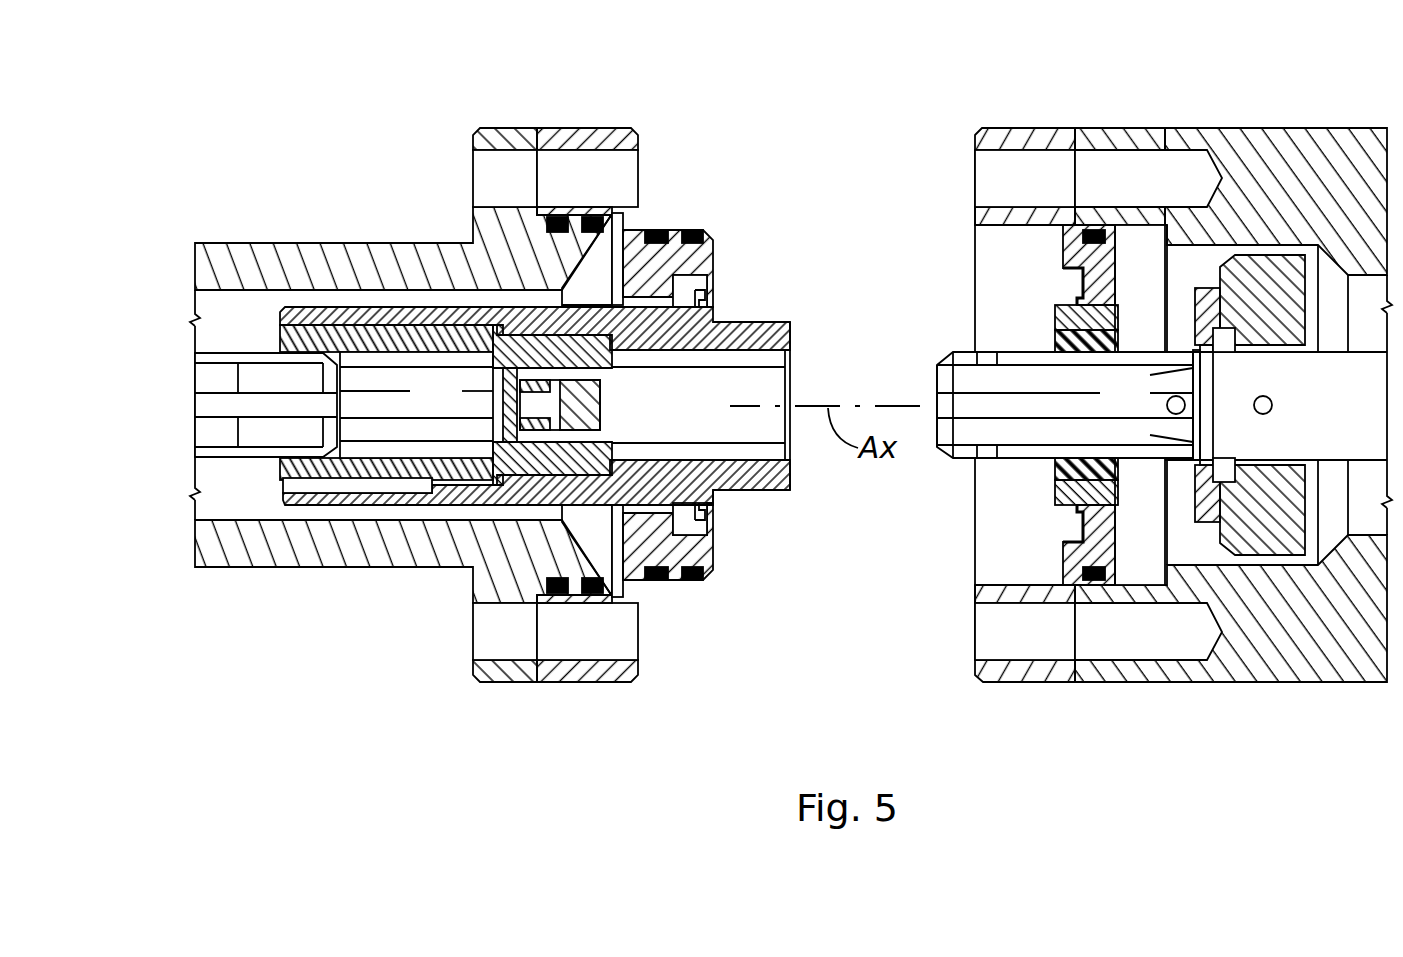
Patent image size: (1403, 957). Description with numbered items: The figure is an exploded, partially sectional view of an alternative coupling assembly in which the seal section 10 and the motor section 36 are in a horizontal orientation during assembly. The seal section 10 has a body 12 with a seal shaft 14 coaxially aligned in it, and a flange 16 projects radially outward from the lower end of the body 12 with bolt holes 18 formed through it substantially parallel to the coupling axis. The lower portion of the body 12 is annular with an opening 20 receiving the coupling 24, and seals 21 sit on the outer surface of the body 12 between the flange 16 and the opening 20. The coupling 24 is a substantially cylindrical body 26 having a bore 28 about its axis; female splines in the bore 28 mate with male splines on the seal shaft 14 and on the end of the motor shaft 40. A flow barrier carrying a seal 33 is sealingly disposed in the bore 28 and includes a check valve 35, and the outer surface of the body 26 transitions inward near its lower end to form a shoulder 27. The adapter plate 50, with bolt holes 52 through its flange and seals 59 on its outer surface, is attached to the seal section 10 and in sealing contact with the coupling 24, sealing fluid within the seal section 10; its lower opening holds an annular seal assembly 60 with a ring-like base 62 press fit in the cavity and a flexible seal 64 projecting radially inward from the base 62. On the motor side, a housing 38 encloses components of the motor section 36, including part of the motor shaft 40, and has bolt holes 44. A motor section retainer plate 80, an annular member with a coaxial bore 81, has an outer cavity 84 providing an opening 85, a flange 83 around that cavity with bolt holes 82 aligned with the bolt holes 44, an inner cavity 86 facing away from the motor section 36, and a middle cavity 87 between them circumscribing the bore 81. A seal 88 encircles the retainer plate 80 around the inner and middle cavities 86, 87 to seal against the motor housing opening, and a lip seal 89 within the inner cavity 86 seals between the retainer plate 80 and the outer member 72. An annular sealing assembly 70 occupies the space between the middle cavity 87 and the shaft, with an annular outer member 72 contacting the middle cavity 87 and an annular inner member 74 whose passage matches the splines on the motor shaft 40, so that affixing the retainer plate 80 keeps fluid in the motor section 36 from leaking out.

The seal section 10 is at (182, 172).
The body 12 is at (325, 242).
The seal shaft 14 is at (215, 383).
The flange 16 is at (497, 128).
The bolt holes 18 is at (488, 186).
The opening 20 is at (596, 284).
The seals 21 is at (616, 196).
The coupling 24 is at (790, 508).
The body 26 is at (732, 494).
The shoulder 27 is at (716, 492).
The bore 28 is at (785, 379).
The seal 33 is at (563, 474).
The check valve 35 is at (530, 410).
The motor section 36 is at (1125, 77).
The housing 38 is at (1315, 128).
The motor shaft 40 is at (1113, 413).
The bolt holes 44 is at (1125, 644).
The adapter plate 50 is at (568, 86).
The bolt holes 52 is at (570, 186).
The seals 59 is at (707, 218).
The annular seal assembly 60 is at (727, 280).
The base 62 is at (727, 280).
The flexible seal 64 is at (713, 306).
The annular sealing assembly 70 is at (1107, 285).
The outer member 72 is at (1085, 283).
The inner member 74 is at (1060, 348).
The motor section retainer plate 80 is at (960, 100).
The bore 81 is at (1010, 340).
The bolt holes 82 is at (1008, 188).
The flange 83 is at (1005, 683).
The outer cavity 84 is at (1003, 561).
The opening 85 is at (960, 570).
The inner cavity 86 is at (1060, 280).
The middle cavity 87 is at (1035, 480).
The seal 88 is at (1118, 205).
The lip seal 89 is at (1080, 510).